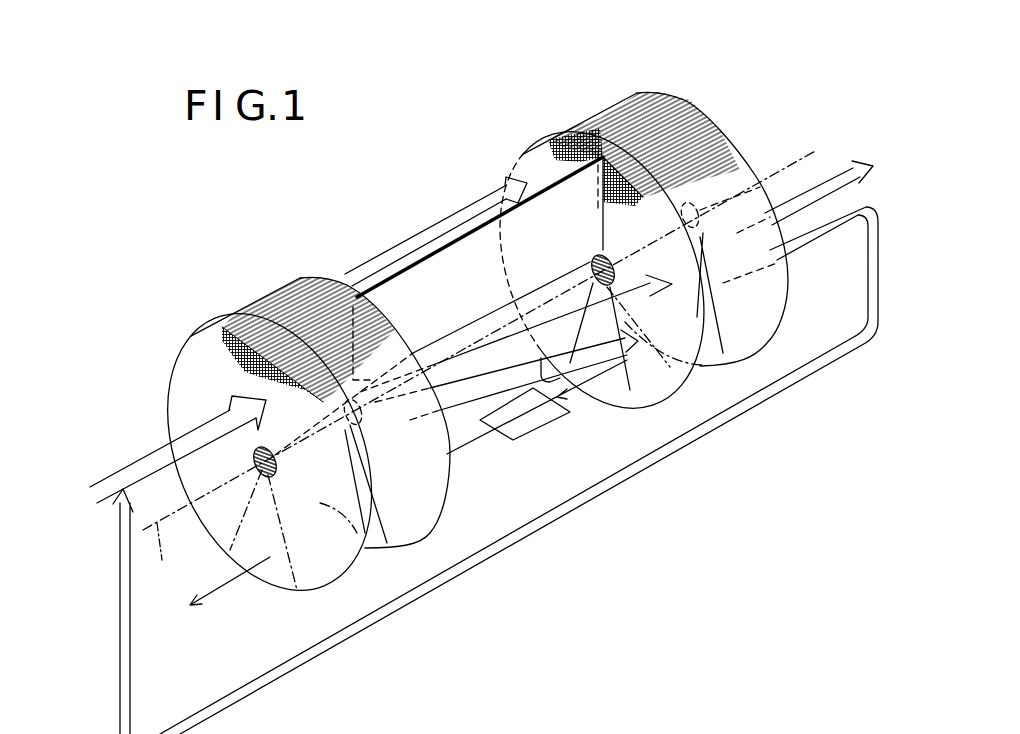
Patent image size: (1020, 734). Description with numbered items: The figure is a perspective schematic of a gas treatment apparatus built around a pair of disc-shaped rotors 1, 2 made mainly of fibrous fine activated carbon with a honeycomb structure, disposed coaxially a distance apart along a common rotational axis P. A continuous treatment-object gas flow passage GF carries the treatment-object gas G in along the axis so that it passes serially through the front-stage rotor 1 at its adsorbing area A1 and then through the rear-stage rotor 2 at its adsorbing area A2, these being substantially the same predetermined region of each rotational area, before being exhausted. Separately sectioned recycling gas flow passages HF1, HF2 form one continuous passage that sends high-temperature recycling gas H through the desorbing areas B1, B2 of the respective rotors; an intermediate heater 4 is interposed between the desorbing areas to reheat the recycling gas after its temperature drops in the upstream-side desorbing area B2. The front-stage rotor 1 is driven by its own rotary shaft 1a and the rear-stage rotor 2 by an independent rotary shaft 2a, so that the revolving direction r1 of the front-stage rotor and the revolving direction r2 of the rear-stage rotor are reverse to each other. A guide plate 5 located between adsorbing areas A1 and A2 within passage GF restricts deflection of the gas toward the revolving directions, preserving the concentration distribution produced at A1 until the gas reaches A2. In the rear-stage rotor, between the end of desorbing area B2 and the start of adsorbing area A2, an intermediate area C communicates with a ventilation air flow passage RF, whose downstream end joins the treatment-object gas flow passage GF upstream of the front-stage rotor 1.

The front-stage rotor 1 is at (180, 347).
The rotary shaft of front-stage rotor 1a is at (255, 455).
The rear-stage rotor 2 is at (520, 148).
The rotary shaft of rear-stage rotor 2a is at (590, 260).
The intermediate heater 4 is at (538, 430).
The guide plate 5 is at (372, 272).
The treatment-object gas flow passage GF is at (140, 470).
The recycling gas flow passage HF1 is at (465, 452).
The recycling gas flow passage HF2 is at (805, 258).
The ventilation air flow passage RF is at (745, 413).
The treatment-object gas G is at (95, 601).
The high-temperature recycling gas H is at (502, 340).
The rotational axis P is at (160, 564).
The adsorbing area of front-stage rotor A1 is at (177, 402).
The adsorbing area of rear-stage rotor A2 is at (514, 176).
The desorbing area of front-stage rotor B1 is at (277, 581).
The desorbing area of rear-stage rotor B2 is at (614, 391).
The intermediate area C is at (661, 389).
The revolving direction of front-stage rotor r1 is at (280, 496).
The revolving direction of rear-stage rotor r2 is at (618, 255).